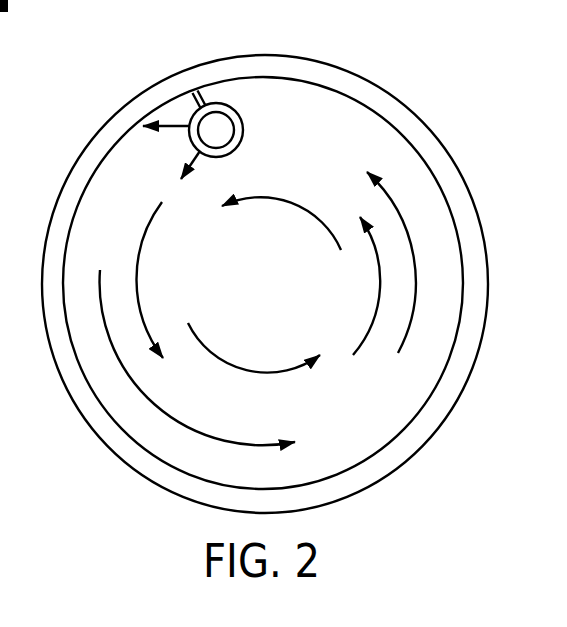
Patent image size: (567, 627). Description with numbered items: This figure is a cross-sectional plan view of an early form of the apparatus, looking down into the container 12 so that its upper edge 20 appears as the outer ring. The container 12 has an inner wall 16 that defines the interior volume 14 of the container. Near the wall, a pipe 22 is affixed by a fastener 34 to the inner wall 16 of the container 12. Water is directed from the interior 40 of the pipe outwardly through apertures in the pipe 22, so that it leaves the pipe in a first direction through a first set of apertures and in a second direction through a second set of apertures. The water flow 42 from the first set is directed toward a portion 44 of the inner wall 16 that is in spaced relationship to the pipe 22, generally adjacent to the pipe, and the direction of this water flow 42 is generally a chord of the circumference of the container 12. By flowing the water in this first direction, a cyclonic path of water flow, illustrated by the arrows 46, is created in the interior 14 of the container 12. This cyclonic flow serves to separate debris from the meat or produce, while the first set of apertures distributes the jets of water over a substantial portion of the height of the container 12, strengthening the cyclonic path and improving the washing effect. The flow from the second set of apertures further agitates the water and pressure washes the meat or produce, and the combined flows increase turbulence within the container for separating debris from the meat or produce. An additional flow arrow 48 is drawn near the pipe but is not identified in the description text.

The vessel 12 is at (399, 467).
The interior chamber 14 is at (246, 300).
The inner wall 16 is at (398, 431).
The outer wall 20 is at (265, 295).
The nozzle 22 is at (262, 86).
The supply conduit 34 is at (203, 91).
The nozzle outlet 40 is at (216, 128).
The jet direction arrow 42 is at (172, 126).
The annular space 44 is at (251, 295).
The circulating flow 46 is at (192, 425).
The spray flow 48 is at (180, 181).